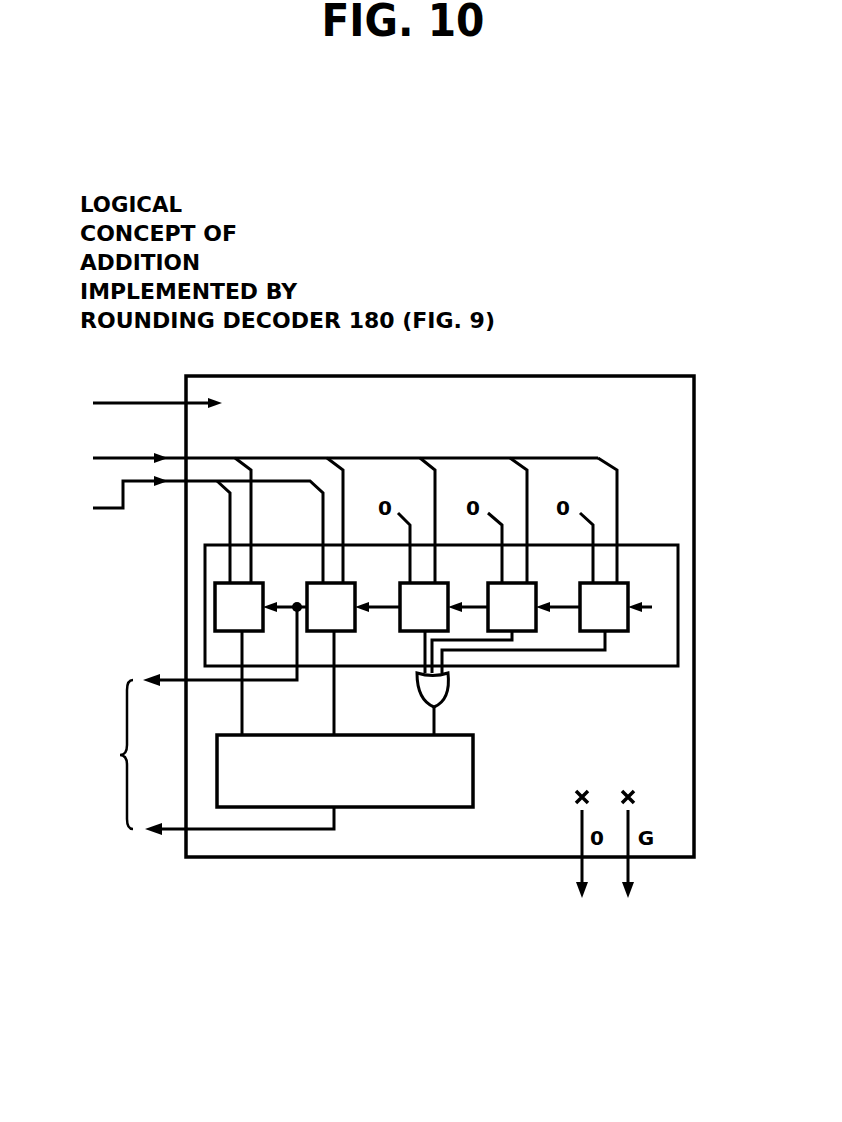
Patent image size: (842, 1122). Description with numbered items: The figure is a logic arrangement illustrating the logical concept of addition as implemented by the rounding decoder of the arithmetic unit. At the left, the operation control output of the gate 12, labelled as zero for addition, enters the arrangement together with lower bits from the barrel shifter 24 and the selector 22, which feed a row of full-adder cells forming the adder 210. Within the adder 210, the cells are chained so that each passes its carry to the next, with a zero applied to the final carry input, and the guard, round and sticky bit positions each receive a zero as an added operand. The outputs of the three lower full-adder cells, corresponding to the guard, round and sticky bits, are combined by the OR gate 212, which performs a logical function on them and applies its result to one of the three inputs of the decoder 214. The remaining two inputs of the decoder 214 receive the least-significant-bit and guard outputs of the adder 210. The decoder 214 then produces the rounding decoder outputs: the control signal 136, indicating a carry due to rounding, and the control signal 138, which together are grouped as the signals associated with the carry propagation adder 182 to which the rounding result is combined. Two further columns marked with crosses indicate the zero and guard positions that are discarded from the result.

The gate 12 is at (214, 403).
The barrel shifter 24 is at (329, 505).
The selector 22 is at (182, 529).
The control signal 136 is at (172, 679).
The control signal 138 is at (168, 832).
The carry propagation adder 182 is at (96, 754).
The adder 210 is at (577, 666).
The OR gate 212 is at (448, 690).
The decoder 214 is at (475, 770).